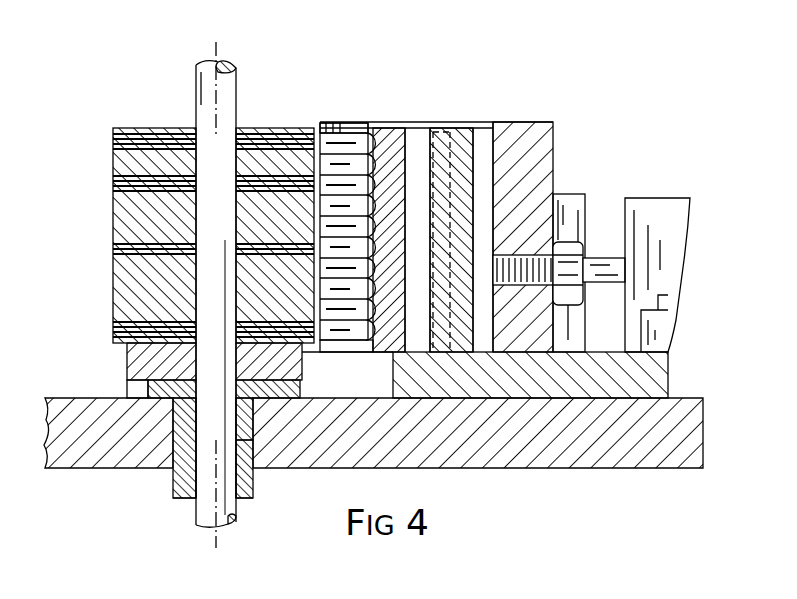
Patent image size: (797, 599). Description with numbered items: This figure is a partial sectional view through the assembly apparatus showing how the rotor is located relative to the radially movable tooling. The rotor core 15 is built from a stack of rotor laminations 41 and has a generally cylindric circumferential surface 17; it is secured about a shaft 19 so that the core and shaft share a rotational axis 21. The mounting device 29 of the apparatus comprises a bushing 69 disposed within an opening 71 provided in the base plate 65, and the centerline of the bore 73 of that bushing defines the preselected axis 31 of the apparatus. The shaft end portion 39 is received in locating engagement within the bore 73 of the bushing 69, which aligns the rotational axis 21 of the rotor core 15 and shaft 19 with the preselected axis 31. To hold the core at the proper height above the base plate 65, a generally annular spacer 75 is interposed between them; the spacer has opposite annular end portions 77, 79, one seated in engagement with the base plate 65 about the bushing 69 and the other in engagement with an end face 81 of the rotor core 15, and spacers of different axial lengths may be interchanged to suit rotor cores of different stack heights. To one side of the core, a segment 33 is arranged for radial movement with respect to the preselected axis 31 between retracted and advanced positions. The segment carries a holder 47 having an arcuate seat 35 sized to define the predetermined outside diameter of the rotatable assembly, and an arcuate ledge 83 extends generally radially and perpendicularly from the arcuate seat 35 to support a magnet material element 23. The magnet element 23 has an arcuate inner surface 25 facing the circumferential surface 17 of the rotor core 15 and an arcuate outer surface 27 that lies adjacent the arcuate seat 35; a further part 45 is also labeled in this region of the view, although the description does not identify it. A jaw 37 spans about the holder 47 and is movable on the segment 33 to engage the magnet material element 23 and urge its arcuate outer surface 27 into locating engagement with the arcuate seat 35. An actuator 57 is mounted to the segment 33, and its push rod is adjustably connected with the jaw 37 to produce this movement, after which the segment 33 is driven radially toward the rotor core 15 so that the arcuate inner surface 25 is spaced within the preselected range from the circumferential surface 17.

The rotor core 15 is at (108, 124).
The circumferential surface 17 is at (113, 205).
The shaft 19 is at (200, 80).
The rotational axis 21 is at (212, 50).
The magnet material element 23 is at (390, 135).
The arcuate inner surface 25 is at (333, 212).
The arcuate outer surface 27 is at (415, 140).
The mounting device 29 is at (170, 494).
The preselected axis 31 is at (216, 532).
The segment 33 is at (567, 153).
The arcuate seat 35 is at (427, 175).
The jaw 37 is at (541, 122).
The shaft end portion 39 is at (224, 428).
The rotor lamination 41 is at (113, 162).
The retainer plate 45 is at (355, 138).
The holder 47 is at (481, 125).
The actuator 57 is at (660, 205).
The base plate 65 is at (456, 442).
The bushing 69 is at (173, 482).
The opening 71 is at (255, 470).
The bore 73 is at (253, 440).
The annular spacer 75 is at (320, 392).
The annular end portion 77 is at (127, 362).
The annular end portion 79 is at (127, 388).
The end face 81 is at (122, 323).
The arcuate ledge 83 is at (392, 348).